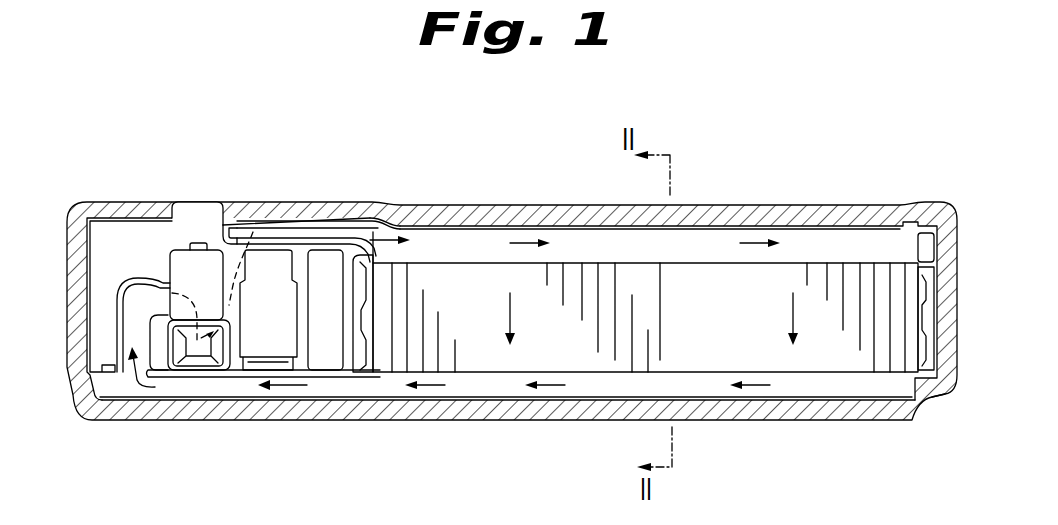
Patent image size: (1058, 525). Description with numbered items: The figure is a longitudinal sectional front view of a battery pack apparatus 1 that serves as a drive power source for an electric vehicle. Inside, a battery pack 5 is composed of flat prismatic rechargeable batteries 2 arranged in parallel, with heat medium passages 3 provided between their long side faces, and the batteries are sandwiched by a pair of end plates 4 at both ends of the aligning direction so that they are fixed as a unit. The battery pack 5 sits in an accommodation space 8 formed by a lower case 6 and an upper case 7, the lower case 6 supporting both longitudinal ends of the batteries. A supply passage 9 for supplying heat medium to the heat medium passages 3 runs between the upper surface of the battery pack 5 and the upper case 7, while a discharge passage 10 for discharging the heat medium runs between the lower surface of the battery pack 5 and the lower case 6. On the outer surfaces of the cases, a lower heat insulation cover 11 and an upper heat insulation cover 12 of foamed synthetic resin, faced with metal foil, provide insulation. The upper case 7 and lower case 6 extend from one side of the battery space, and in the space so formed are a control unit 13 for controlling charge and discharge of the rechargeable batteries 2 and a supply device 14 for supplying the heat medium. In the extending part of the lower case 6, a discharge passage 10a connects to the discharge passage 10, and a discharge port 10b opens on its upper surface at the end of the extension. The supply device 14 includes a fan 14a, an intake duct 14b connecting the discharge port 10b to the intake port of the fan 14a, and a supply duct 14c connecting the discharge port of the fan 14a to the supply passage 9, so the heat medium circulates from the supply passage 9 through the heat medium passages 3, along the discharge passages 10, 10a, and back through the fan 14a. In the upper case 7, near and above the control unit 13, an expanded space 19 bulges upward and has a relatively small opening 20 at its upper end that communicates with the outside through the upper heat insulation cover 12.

The battery pack apparatus 1 is at (923, 196).
The rechargeable battery 2 is at (868, 278).
The heat medium passage 3 is at (930, 322).
The end plate 4 is at (352, 340).
The battery pack 5 is at (701, 255).
The lower case 6 is at (485, 405).
The upper case 7 is at (500, 223).
The accommodation space 8 is at (801, 235).
The supply passage 9 is at (585, 242).
The discharge passage 10 is at (595, 387).
The discharge passage 10a is at (227, 387).
The discharge port 10b is at (117, 377).
The lower heat insulation cover 11 is at (415, 405).
The upper heat insulation cover 12 is at (435, 212).
The control unit 13 is at (318, 340).
The supply device 14 is at (151, 268).
The fan 14a is at (203, 275).
The intake duct 14b is at (125, 308).
The supply duct 14c is at (310, 240).
The expanded space 19 is at (230, 213).
The opening 20 is at (198, 203).